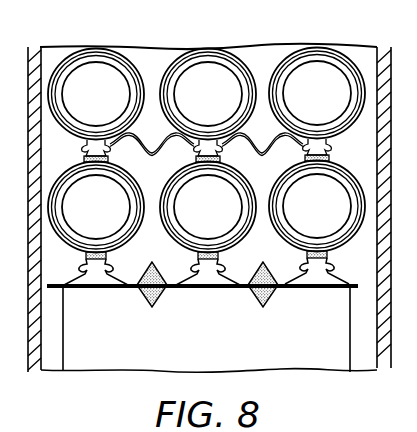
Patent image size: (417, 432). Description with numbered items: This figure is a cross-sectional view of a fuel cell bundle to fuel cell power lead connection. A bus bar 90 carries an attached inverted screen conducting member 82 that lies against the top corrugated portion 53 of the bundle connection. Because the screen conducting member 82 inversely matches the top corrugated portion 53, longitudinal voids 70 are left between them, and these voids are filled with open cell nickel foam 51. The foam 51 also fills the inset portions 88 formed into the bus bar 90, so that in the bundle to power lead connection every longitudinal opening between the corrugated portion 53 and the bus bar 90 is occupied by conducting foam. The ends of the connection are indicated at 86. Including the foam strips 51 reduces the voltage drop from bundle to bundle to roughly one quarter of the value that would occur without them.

The open cell nickel foam 51 is at (222, 278).
The top corrugated portion 53 is at (151, 264).
The longitudinal void 70 is at (281, 269).
The inverted screen conducting member 82 is at (100, 289).
The plate end edge 86 is at (51, 292).
The inset portion 88 is at (148, 306).
The bus bar 90 is at (333, 347).